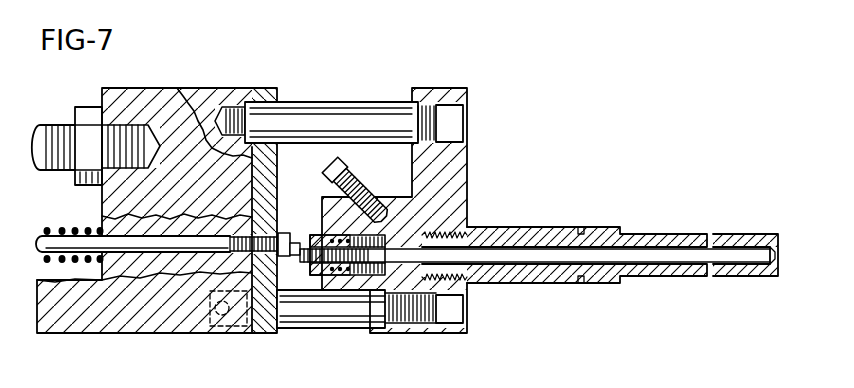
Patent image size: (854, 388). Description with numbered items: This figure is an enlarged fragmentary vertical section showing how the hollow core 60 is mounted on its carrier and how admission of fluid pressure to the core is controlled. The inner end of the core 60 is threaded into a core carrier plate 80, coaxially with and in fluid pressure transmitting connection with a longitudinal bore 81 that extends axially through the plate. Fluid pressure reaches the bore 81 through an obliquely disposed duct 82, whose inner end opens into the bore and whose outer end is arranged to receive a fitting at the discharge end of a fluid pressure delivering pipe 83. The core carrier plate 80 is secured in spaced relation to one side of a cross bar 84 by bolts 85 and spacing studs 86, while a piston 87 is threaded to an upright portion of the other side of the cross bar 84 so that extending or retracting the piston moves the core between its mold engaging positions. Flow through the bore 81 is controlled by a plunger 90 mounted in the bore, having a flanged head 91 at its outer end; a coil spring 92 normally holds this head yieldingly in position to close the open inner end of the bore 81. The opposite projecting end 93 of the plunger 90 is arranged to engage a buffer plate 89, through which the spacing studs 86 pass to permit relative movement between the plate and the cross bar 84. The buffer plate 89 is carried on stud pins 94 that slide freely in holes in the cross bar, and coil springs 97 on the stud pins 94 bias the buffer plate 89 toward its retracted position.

The hollow core 60 is at (676, 271).
The core carrier plate 80 is at (460, 162).
The longitudinal bore 81 is at (648, 246).
The obliquely disposed duct 82 is at (403, 234).
The fluid pressure delivering pipe 83 is at (333, 176).
The cross bar 84 is at (161, 91).
The bolts 85 is at (455, 123).
The spacing studs 86 is at (329, 114).
The piston 87 is at (40, 128).
The buffer plate 89 is at (261, 91).
The plunger 90 is at (561, 258).
The flanged head 91 is at (783, 266).
The coil spring 92 is at (365, 274).
The outer projecting end 93 is at (297, 253).
The stud pins 94 is at (40, 244).
The coil springs 97 is at (68, 229).